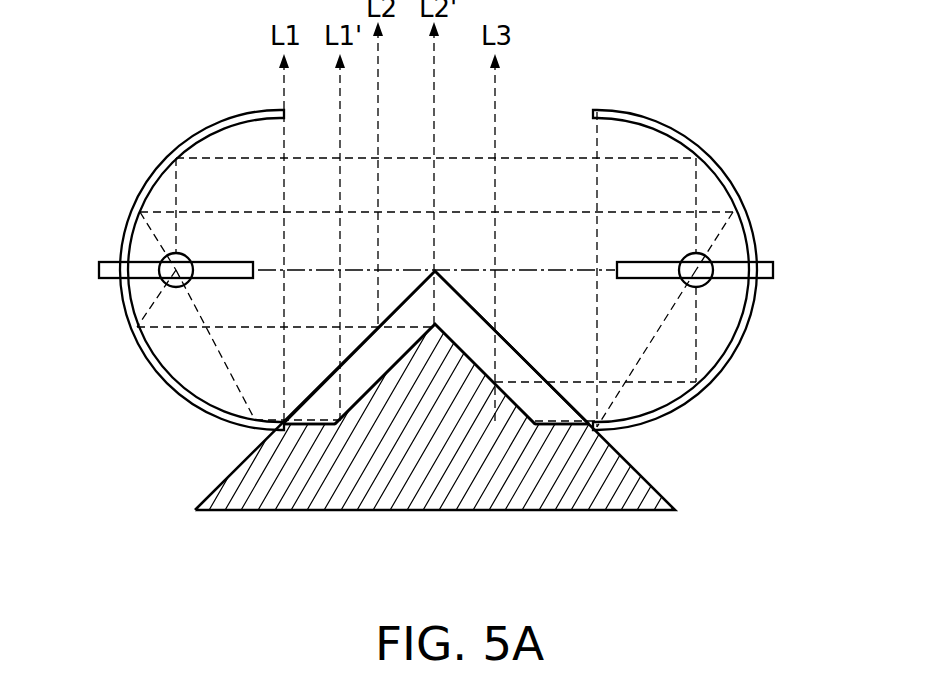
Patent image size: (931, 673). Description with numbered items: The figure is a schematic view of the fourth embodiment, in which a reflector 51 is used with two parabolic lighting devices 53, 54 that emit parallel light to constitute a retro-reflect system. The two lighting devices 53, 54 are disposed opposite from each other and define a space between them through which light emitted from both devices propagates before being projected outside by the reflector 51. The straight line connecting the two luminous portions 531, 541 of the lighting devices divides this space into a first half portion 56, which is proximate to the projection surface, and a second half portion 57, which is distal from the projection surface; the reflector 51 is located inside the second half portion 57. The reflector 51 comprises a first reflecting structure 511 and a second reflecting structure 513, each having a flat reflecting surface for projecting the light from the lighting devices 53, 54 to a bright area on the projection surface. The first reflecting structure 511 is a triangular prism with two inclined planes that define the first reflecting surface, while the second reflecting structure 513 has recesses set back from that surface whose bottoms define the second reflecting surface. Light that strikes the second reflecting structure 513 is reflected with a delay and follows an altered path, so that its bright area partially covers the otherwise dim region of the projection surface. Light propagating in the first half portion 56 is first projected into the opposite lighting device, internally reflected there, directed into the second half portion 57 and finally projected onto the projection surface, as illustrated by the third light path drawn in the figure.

The reflector 51 is at (571, 516).
The first reflecting structure 511 is at (303, 402).
The second reflecting structure 513 is at (376, 384).
The parabolic lighting device 53 is at (126, 154).
The luminous portion 531 is at (142, 268).
The parabolic lighting device 54 is at (746, 153).
The luminous portion 541 is at (727, 268).
The first half portion 56 is at (553, 254).
The second half portion 57 is at (553, 322).